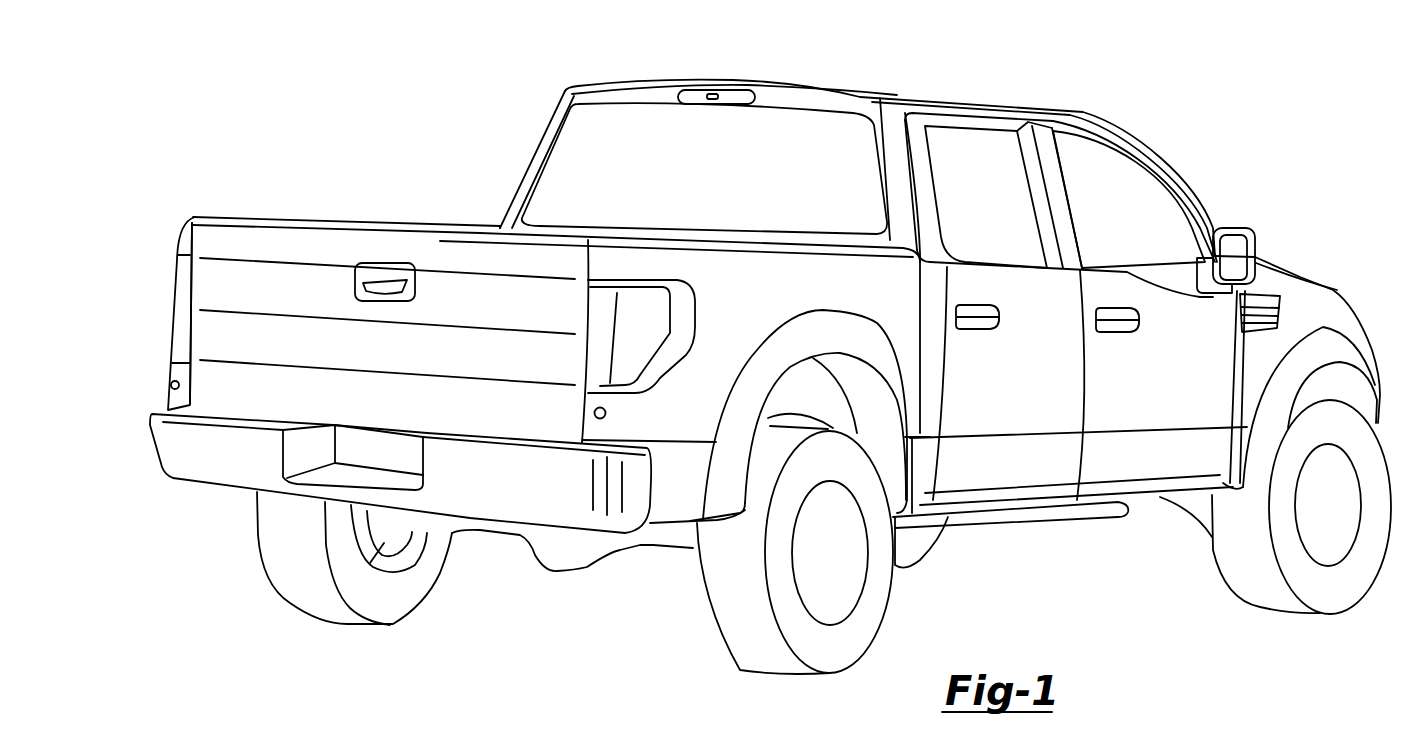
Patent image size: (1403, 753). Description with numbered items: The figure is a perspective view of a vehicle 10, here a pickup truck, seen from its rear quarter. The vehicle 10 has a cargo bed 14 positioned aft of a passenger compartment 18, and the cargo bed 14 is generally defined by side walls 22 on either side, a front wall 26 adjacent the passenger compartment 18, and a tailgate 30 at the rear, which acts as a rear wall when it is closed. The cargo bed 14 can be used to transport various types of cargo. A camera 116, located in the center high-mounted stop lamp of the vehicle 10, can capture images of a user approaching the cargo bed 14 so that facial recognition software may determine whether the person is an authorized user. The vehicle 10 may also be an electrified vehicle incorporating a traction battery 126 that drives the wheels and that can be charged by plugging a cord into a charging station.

The vehicle 10 is at (630, 60).
The cargo bed 14 is at (295, 193).
The passenger compartment 18 is at (957, 94).
The side walls 22 is at (388, 217).
The front wall 26 is at (565, 232).
The tailgate 30 is at (222, 288).
The camera 116 is at (730, 90).
The traction battery 126 is at (1013, 515).